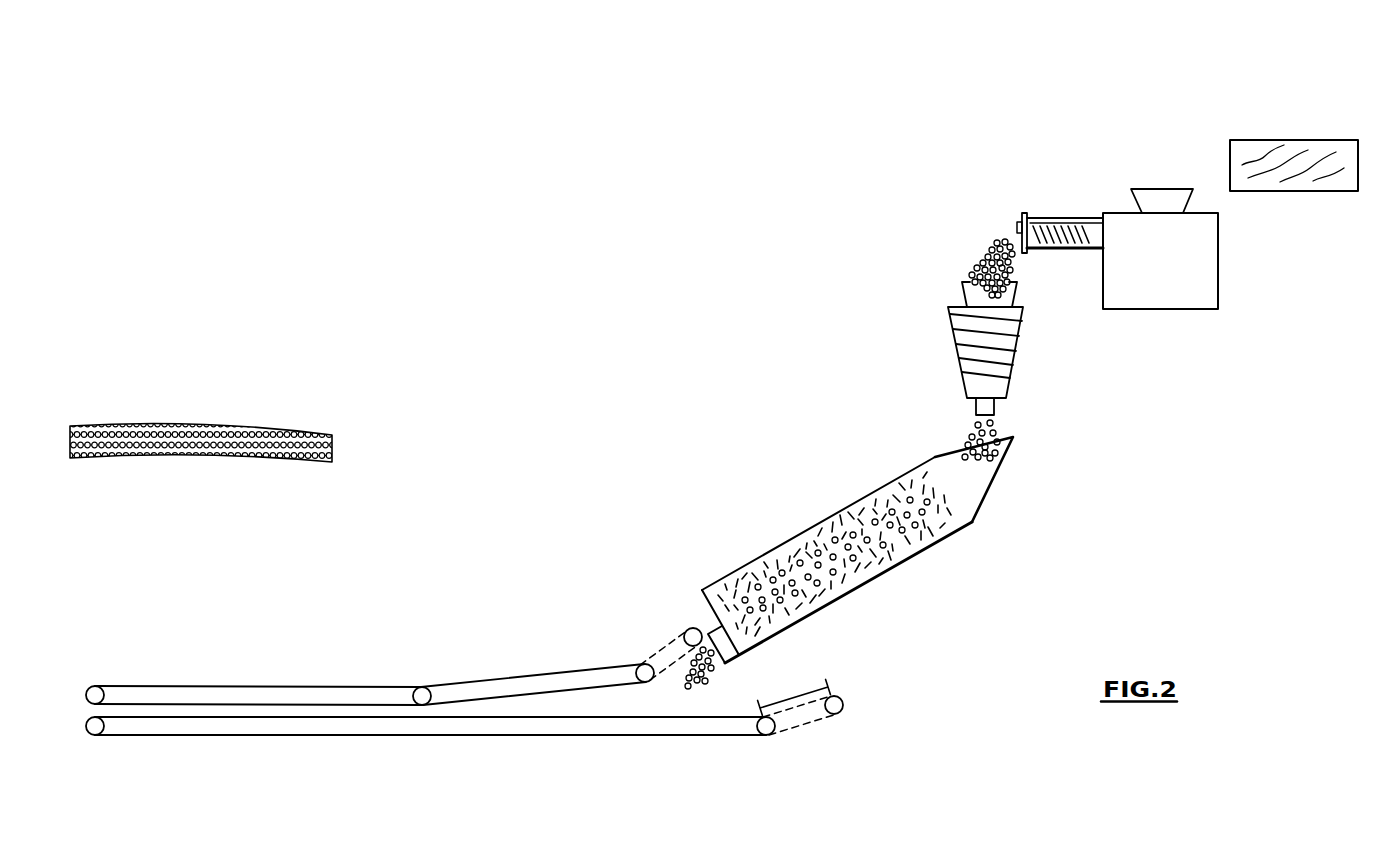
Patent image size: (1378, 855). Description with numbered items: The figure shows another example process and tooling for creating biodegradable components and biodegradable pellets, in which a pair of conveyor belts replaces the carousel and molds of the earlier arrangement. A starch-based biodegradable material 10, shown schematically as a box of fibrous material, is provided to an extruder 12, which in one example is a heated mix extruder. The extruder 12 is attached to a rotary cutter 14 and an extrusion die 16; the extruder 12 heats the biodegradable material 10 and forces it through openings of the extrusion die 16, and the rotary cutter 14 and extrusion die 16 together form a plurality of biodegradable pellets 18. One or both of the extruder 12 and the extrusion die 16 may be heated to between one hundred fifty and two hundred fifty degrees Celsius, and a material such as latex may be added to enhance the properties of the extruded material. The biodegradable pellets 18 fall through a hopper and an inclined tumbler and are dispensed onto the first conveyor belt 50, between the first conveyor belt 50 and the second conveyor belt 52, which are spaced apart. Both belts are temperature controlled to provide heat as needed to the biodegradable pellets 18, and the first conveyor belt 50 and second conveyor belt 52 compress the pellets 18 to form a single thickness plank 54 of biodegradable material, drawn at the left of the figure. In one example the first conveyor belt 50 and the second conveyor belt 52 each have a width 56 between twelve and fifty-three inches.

The starch-based biodegradable material 10 is at (1307, 140).
The extruder 12 is at (1190, 275).
The rotary cutter 14 is at (1017, 227).
The extrusion die 16 is at (1024, 213).
The biodegradable pellets 18 is at (985, 262).
The first conveyor belt 50 is at (657, 727).
The second conveyor belt 52 is at (561, 677).
The single thickness plank 54 is at (243, 430).
The width 56 is at (801, 692).